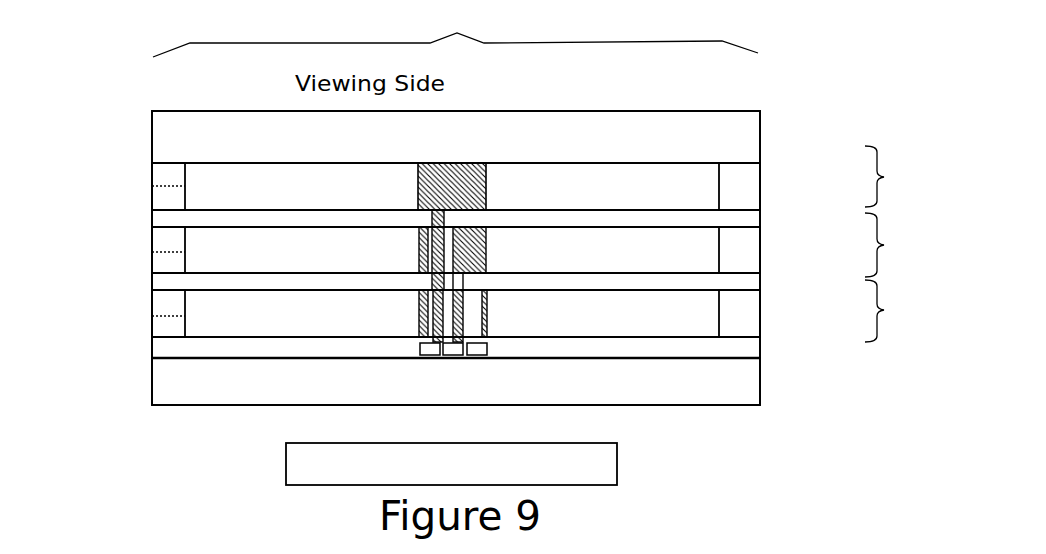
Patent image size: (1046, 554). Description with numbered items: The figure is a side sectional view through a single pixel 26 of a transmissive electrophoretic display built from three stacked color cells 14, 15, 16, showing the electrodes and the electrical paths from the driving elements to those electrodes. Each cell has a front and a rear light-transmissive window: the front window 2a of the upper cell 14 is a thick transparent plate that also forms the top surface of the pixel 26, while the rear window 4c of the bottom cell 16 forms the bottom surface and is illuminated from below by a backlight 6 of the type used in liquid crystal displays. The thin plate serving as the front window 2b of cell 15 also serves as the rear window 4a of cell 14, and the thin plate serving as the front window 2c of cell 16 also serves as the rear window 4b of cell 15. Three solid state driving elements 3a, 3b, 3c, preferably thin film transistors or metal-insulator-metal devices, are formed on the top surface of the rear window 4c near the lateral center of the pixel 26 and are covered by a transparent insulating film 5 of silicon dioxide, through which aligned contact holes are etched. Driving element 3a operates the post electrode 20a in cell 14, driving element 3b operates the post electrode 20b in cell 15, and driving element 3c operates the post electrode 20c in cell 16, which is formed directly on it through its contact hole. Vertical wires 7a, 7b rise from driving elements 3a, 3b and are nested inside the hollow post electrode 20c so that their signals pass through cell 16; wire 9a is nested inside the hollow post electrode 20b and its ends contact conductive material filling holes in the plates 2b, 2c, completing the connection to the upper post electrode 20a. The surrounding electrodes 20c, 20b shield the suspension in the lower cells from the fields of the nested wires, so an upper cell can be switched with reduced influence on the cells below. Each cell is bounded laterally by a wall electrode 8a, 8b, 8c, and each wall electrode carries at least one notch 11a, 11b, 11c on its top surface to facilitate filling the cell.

The pixel 26 is at (455, 30).
The front light-transmissive window 2a is at (618, 122).
The front window 2b is at (190, 217).
The front window 2c is at (170, 286).
The rear window 4a is at (728, 215).
The rear window 4b is at (747, 280).
The rear light-transmissive window 4c is at (658, 398).
The transparent insulating film 5 is at (742, 348).
The backlight 6 is at (316, 465).
The vertical wire 7a is at (433, 307).
The vertical wire 7b is at (463, 320).
The wall electrode 8a is at (817, 169).
The wall electrode 8b is at (817, 230).
The wall electrode 8c is at (817, 313).
The vertical wire 9a is at (438, 246).
The notch 11a is at (165, 185).
The notch 11b is at (167, 251).
The notch 11c is at (167, 314).
The cell 14 is at (899, 176).
The cell 15 is at (896, 245).
The cell 16 is at (893, 311).
The post electrode 20a is at (468, 175).
The post electrode 20b is at (537, 247).
The post electrode 20c is at (542, 302).
The driving element 3a is at (428, 356).
The driving element 3b is at (452, 356).
The driving element 3c is at (478, 356).